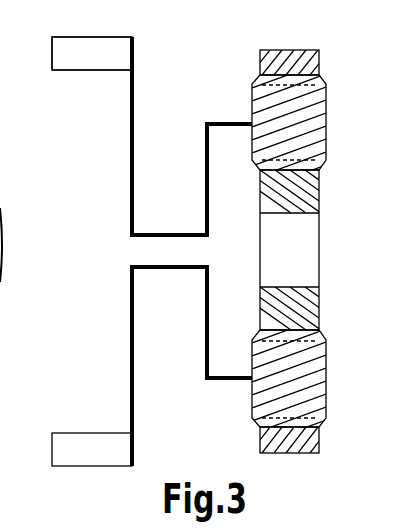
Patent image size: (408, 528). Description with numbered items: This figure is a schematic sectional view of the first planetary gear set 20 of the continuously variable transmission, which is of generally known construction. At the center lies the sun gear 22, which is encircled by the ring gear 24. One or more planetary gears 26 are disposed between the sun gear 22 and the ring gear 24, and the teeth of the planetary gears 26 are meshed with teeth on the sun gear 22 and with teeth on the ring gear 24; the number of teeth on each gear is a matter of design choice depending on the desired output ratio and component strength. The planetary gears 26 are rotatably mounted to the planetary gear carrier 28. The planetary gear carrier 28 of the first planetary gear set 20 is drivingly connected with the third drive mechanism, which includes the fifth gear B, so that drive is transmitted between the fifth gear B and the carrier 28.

The first planetary gear set 20 is at (237, 44).
The sun gear 22 is at (314, 200).
The ring gear 24 is at (302, 58).
The planetary gears 26 is at (309, 125).
The planetary gear carrier 28 is at (229, 123).
The fifth gear B is at (52, 56).